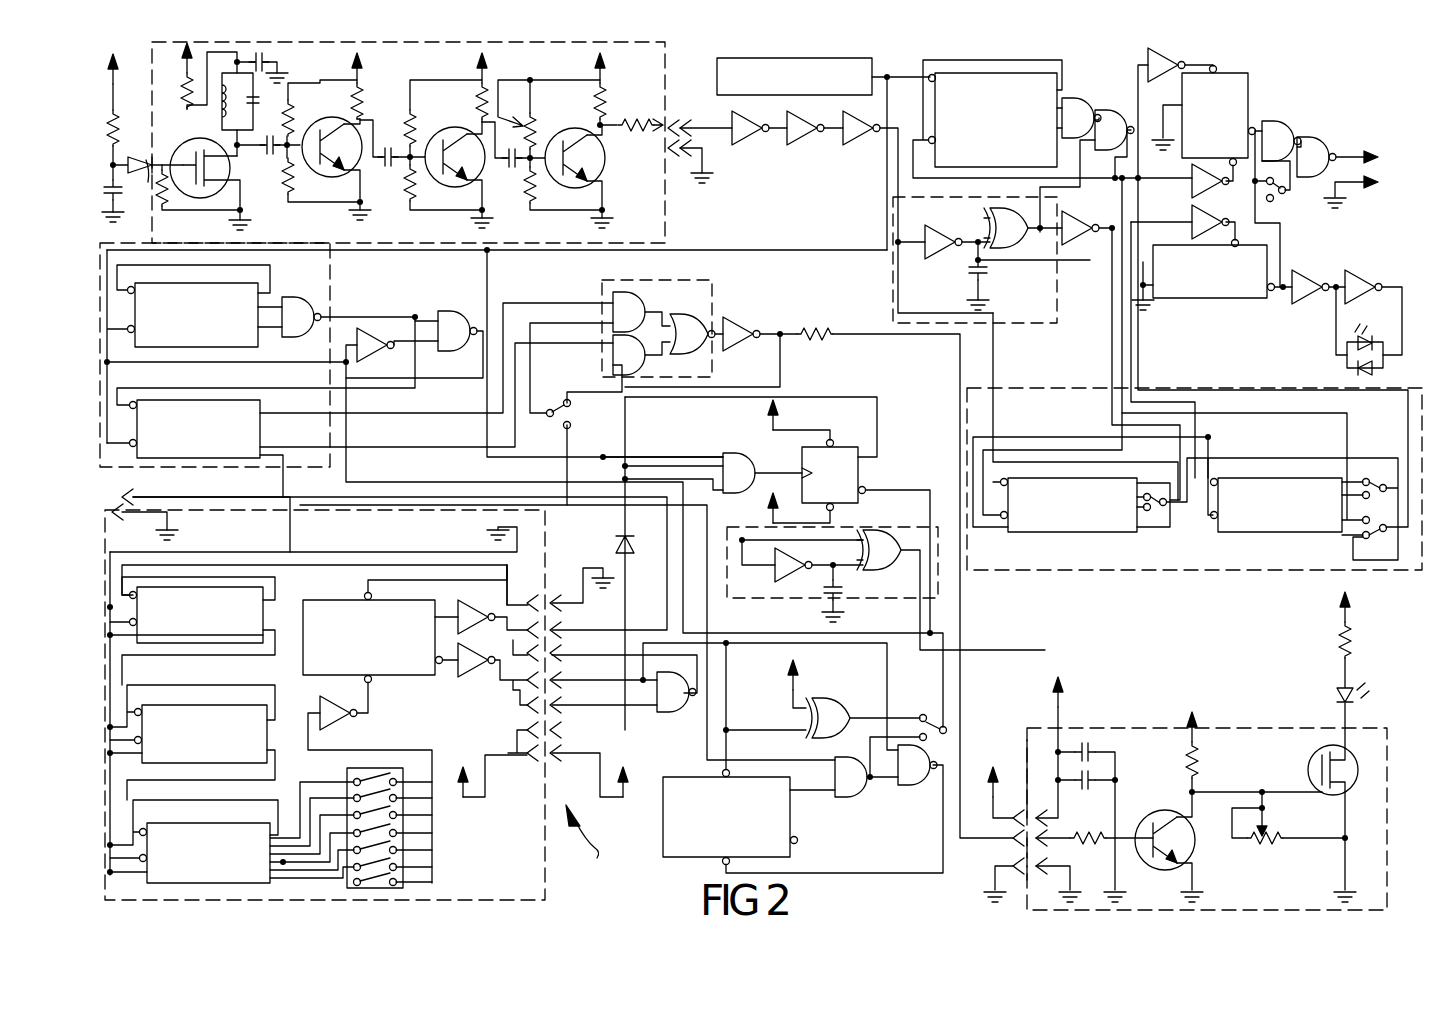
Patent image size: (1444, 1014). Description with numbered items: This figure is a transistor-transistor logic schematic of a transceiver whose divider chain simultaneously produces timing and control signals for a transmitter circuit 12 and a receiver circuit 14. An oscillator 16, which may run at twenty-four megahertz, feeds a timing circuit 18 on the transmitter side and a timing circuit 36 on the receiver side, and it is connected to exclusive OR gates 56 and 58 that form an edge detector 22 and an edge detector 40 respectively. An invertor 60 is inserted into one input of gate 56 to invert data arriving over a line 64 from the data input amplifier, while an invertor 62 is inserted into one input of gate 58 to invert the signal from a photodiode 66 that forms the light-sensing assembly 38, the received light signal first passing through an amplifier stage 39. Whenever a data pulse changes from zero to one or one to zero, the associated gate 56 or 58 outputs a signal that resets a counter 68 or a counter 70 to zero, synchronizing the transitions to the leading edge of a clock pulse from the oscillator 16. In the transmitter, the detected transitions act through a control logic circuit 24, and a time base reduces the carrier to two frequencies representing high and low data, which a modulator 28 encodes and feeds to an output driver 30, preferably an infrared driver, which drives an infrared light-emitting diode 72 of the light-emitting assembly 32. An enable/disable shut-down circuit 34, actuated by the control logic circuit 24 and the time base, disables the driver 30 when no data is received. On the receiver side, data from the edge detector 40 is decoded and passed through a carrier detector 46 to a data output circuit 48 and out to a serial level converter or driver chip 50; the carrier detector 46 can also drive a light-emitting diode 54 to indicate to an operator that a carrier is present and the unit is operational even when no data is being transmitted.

The transmitter circuit 12 is at (594, 842).
The receiver circuit 14 is at (704, 118).
The oscillator 16 is at (715, 76).
The timing circuit 18 is at (335, 296).
The edge detector 22 is at (902, 518).
The control logic circuit 24 is at (801, 466).
The modulator 28 is at (716, 311).
The output driver 30 is at (1248, 728).
The light-emitting assembly 32 is at (1374, 703).
The enable/disable shut-down circuit 34 is at (535, 872).
The timing circuit 36 is at (1060, 388).
The light-sensing assembly 38 is at (146, 152).
The amplifier stage 39 is at (397, 48).
The edge detector 40 is at (1028, 274).
The carrier detector 46 is at (1260, 303).
The data output circuit 48 is at (1248, 95).
The RS 232 level converter or driver chip 50 is at (1312, 136).
The light-emitting diode 54 is at (1333, 364).
The exclusive OR gate 56 is at (899, 558).
The exclusive OR gate 58 is at (1026, 254).
The invertor 60 is at (802, 558).
The invertor 62 is at (938, 258).
The line 64 is at (293, 500).
The photodiode 66 is at (150, 185).
The counter 68 is at (255, 630).
The counter 70 is at (1059, 90).
The infrared light-emitting diode 72 is at (1336, 695).